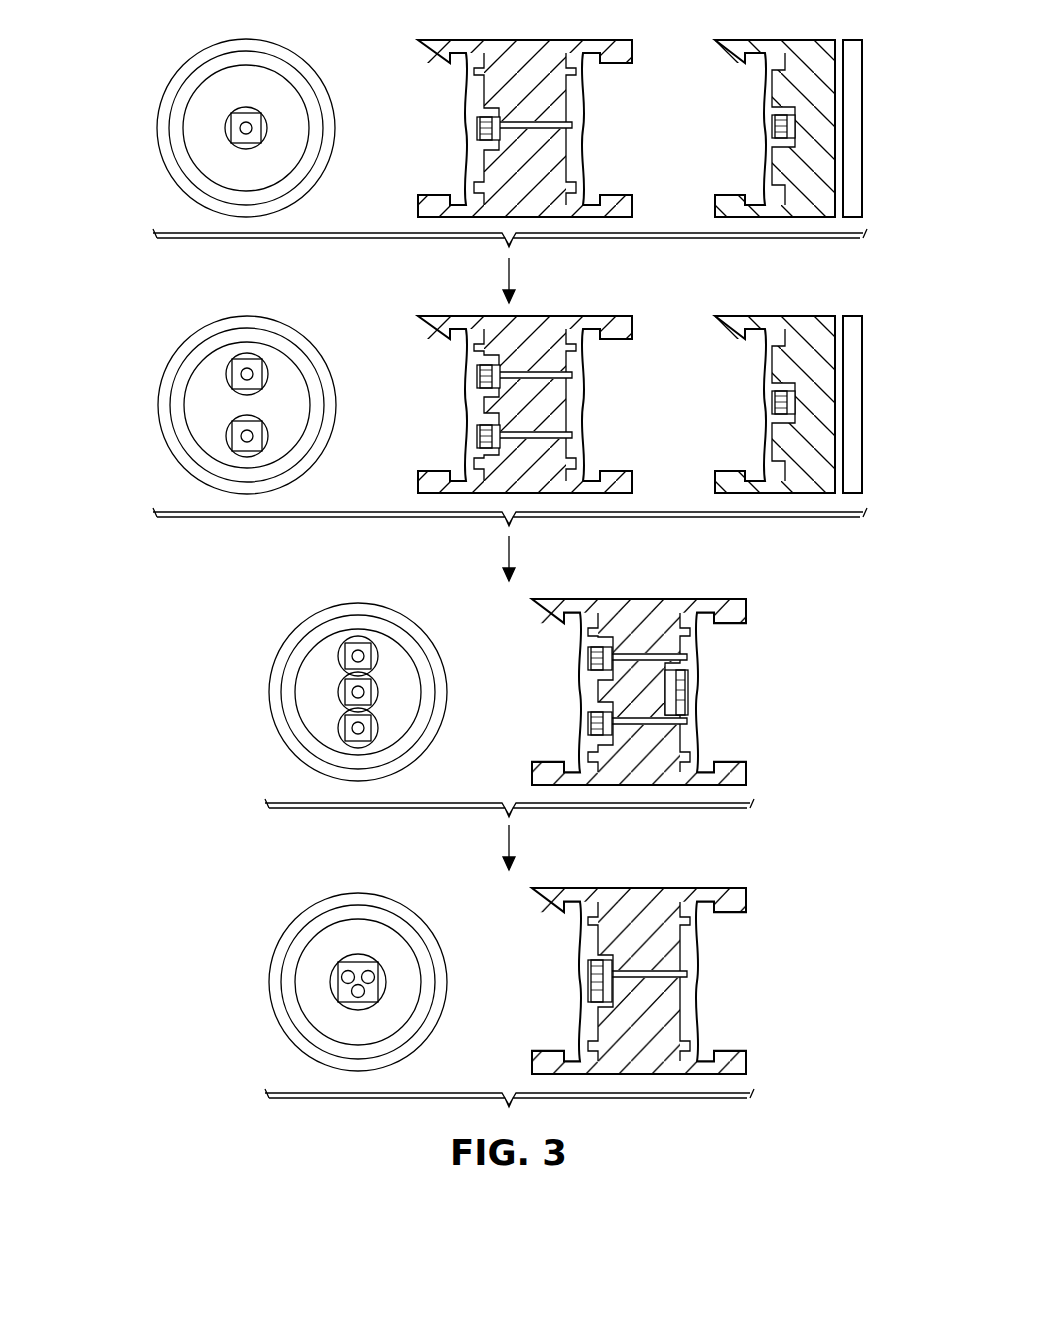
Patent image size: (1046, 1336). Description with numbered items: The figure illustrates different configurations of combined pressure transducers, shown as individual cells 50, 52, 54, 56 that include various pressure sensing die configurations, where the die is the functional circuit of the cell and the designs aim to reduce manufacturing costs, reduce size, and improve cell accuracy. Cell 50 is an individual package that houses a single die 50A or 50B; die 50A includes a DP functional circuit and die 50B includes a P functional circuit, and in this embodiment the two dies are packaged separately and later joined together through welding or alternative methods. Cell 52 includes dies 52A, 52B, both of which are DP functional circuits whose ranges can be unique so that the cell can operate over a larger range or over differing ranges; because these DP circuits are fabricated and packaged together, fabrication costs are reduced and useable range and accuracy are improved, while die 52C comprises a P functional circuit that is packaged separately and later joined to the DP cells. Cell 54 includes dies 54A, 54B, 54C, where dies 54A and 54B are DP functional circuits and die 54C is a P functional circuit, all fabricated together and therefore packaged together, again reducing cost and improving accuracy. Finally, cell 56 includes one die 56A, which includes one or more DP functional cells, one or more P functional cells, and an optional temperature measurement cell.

The cell 50 is at (127, 116).
The die 50A is at (483, 129).
The die 50B is at (783, 128).
The cell 52 is at (127, 382).
The die 52A is at (483, 379).
The die 52B is at (483, 435).
The die 52C is at (783, 403).
The cell 54 is at (220, 711).
The die 54A is at (598, 662).
The die 54B is at (598, 722).
The die 54C is at (675, 693).
The cell 56 is at (220, 1021).
The die 56A is at (598, 987).